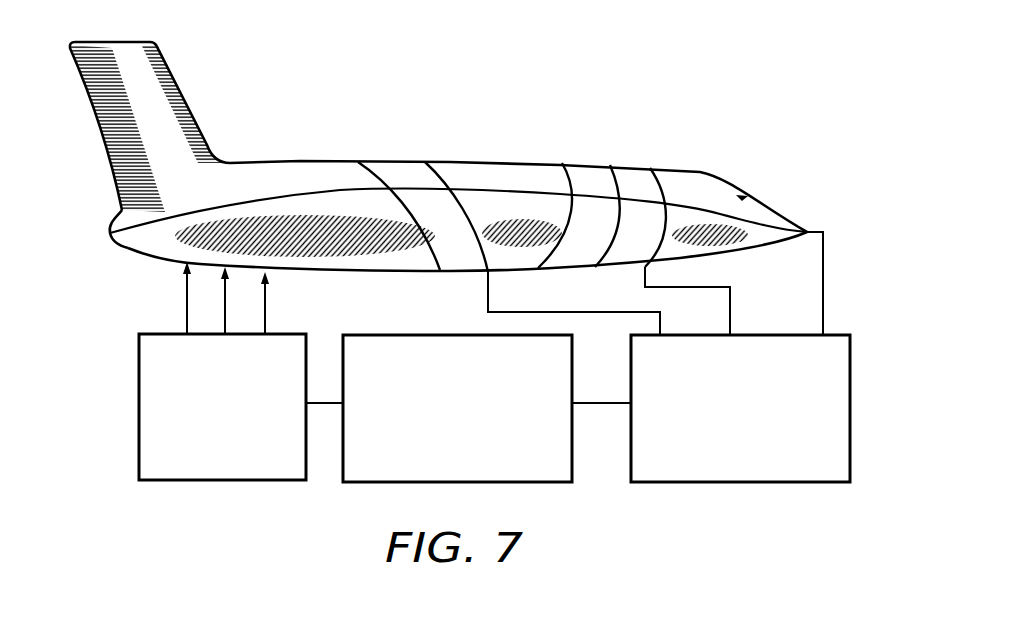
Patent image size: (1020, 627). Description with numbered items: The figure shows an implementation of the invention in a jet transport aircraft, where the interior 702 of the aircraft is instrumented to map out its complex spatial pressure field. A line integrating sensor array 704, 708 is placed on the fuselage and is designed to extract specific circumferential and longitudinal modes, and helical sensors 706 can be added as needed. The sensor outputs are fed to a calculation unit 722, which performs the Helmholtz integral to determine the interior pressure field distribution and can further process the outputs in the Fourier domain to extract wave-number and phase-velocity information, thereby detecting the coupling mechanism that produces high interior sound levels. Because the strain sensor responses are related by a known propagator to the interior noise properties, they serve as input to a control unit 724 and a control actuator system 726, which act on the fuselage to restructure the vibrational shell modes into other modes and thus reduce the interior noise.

The interior 702 is at (282, 191).
The line integrating sensor array 704 is at (650, 168).
The helical sensors 706 is at (383, 160).
The line integrating sensor array 708 is at (485, 187).
The calculation unit 722 is at (850, 348).
The control unit 724 is at (412, 335).
The control actuator system 726 is at (170, 334).